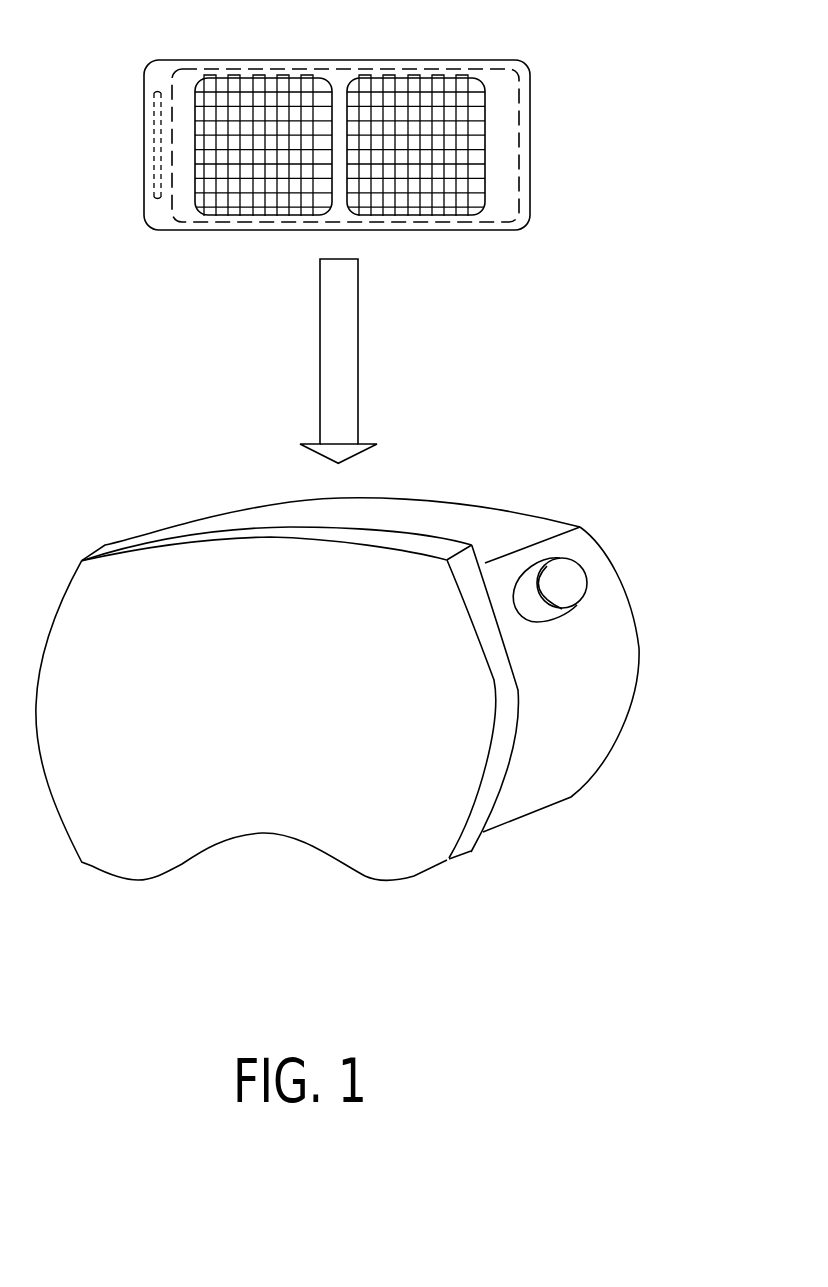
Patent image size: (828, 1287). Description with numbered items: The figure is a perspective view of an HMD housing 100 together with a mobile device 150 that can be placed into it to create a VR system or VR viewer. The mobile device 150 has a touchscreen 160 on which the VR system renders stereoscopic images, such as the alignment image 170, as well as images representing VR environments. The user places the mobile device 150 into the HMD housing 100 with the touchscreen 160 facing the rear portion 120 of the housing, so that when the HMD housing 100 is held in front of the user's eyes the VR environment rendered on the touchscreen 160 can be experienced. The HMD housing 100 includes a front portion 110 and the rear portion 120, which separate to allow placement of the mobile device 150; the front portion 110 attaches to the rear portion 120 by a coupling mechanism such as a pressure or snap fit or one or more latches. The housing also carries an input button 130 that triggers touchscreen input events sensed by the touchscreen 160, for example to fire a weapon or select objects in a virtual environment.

The HMD housing 100 is at (373, 663).
The front portion 110 is at (462, 857).
The rear portion 120 is at (639, 655).
The input button 130 is at (585, 579).
The mobile device 150 is at (370, 116).
The touchscreen 160 is at (343, 68).
The alignment image 170 is at (502, 146).